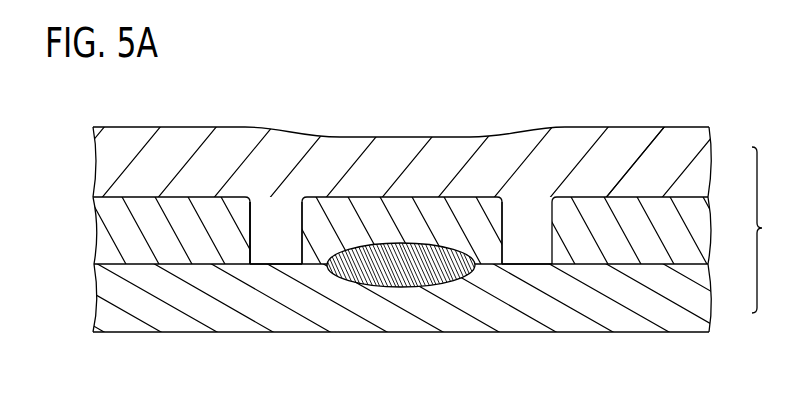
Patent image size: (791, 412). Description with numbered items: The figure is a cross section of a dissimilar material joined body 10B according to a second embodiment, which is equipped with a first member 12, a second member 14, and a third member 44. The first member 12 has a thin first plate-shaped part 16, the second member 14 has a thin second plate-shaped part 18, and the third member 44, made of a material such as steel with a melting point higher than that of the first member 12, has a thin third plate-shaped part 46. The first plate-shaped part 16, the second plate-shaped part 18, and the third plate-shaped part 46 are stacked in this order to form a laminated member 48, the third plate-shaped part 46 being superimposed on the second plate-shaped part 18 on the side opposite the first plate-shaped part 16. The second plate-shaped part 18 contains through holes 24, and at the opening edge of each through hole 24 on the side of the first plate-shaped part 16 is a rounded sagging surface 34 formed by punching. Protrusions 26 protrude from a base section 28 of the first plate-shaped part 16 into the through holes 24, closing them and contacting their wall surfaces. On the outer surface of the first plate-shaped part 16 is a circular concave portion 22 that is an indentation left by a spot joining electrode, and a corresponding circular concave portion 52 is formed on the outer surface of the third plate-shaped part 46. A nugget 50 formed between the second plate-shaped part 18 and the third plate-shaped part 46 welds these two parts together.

The dissimilar material joined body 10B is at (680, 66).
The first member 12 is at (408, 142).
The second member 14 is at (79, 231).
The third member 44 is at (79, 288).
The first plate-shaped part 16 is at (702, 160).
The second plate-shaped part 18 is at (702, 230).
The third plate-shaped part 46 is at (702, 303).
The laminated member 48 is at (768, 230).
The concave portion 22 is at (371, 136).
The through hole 24 is at (254, 223).
The protrusion 26 is at (285, 235).
The base section 28 is at (622, 150).
The sagging surface 34 is at (301, 197).
The nugget 50 is at (380, 262).
The concave portion 52 is at (468, 325).